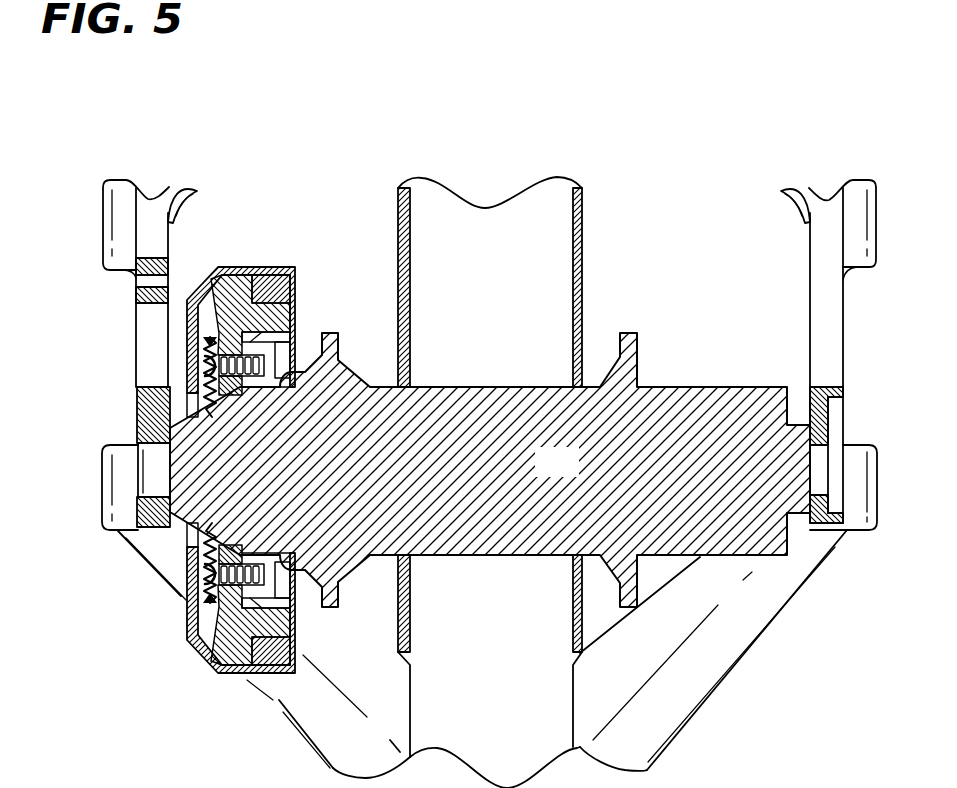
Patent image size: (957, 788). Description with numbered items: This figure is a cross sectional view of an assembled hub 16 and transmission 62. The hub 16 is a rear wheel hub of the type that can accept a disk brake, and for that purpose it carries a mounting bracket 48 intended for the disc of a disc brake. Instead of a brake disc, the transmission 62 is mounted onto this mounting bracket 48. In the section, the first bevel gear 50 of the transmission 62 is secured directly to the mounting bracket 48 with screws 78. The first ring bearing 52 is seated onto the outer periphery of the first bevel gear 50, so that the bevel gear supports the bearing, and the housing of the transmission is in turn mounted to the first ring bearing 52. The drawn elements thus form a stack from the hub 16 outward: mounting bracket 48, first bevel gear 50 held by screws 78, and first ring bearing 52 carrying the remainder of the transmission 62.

The hub 16 is at (575, 474).
The transmission 62 is at (211, 308).
The first ring bearing 52 is at (294, 286).
The first bevel gear 50 is at (294, 311).
The mounting bracket 48 is at (248, 346).
The screws 78 is at (202, 360).